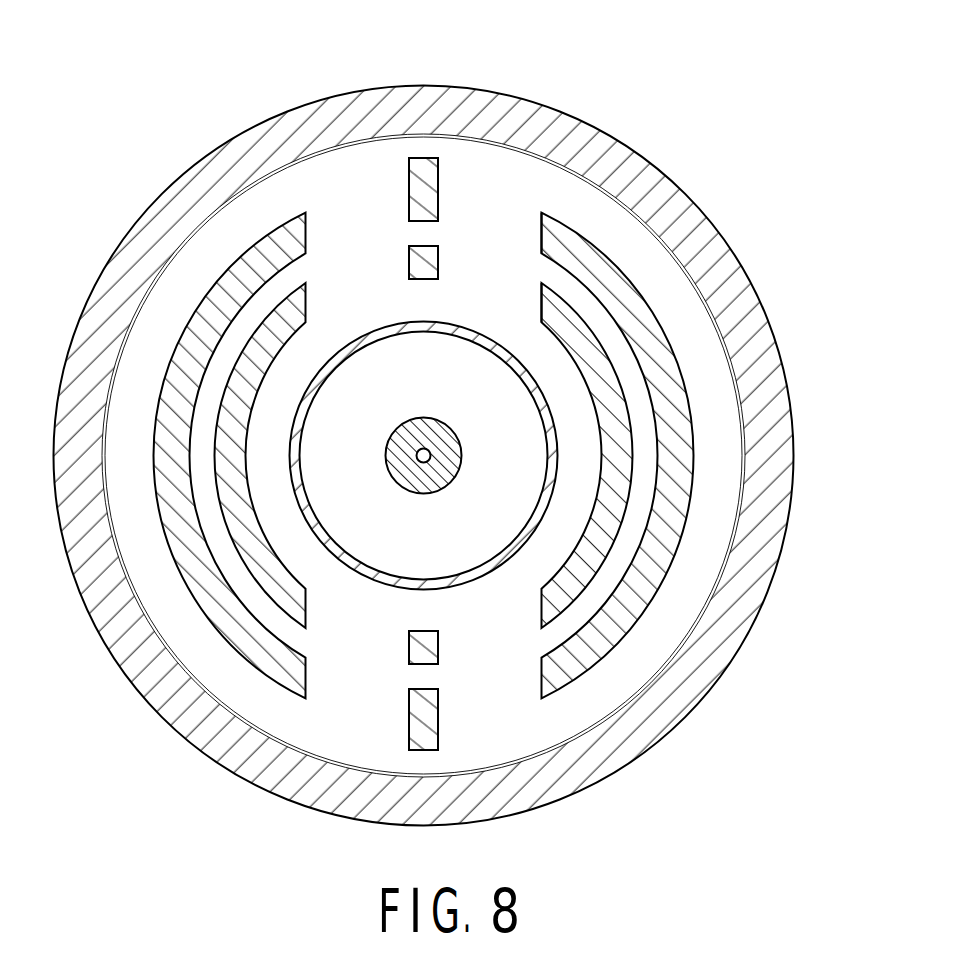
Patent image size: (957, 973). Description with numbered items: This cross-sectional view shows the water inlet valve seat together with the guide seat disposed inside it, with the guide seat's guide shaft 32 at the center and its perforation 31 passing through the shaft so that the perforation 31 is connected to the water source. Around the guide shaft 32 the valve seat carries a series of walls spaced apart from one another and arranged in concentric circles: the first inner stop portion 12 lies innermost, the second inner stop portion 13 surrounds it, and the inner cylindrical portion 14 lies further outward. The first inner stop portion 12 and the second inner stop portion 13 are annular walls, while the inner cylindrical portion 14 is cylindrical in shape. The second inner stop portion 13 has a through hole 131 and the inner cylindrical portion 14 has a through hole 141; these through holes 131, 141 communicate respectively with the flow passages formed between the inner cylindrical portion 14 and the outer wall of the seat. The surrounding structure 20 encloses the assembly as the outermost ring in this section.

The outer housing ring 20 is at (655, 150).
The inner cylindrical portion 14 is at (642, 295).
The through hole 141 is at (543, 230).
The second inner stop portion 13 is at (608, 355).
The through hole 131 is at (542, 308).
The first inner stop portion 12 is at (555, 427).
The guide shaft 32 is at (462, 463).
The perforation 31 is at (424, 456).